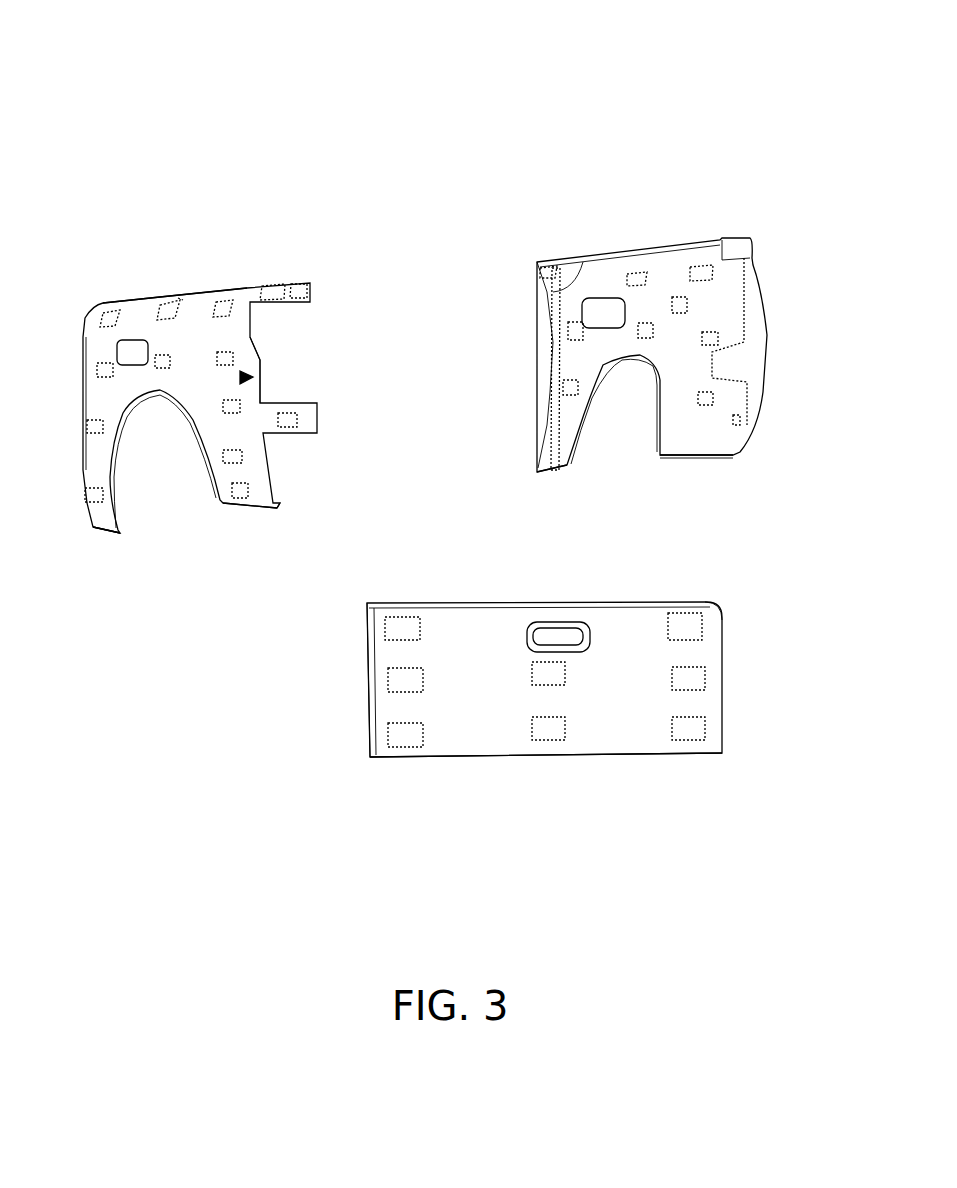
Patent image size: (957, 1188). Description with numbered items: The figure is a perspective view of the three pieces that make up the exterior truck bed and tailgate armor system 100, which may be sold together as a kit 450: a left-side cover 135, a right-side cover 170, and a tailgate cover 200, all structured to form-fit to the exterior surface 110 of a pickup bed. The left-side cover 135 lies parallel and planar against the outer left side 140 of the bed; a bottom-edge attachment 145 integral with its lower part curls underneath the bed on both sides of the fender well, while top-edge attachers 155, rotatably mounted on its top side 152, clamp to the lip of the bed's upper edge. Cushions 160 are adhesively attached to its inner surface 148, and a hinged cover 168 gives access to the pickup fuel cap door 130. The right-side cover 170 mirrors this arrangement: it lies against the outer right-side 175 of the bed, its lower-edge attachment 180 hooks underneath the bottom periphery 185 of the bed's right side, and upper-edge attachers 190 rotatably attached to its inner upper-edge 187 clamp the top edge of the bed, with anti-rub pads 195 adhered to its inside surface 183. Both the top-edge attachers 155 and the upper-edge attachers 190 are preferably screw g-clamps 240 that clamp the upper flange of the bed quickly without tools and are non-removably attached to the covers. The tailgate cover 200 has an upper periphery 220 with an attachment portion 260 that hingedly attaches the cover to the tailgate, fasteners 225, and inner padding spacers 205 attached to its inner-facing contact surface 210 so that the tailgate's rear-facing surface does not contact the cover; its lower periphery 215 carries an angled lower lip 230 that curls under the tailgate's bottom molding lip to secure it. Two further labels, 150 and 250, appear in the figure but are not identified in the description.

The exterior truck bed and tailgate armor system 100 is at (598, 58).
The exterior surface 110 is at (633, 100).
The kit 450 is at (666, 148).
The pickup fuel cap door 130 is at (82, 352).
The left-side cover 135 is at (108, 300).
The outer left side 140 is at (82, 404).
The bottom-edge attachment 145 is at (280, 496).
The inner surface 148 is at (262, 367).
The bottom edges 150 is at (108, 537).
The top side 152 is at (256, 285).
The top-edge attachers 155 is at (100, 298).
The cushions 160 is at (155, 300).
The hinged cover 168 is at (117, 347).
The right-side cover 170 is at (757, 240).
The outer right-side 175 is at (768, 348).
The lower-edge attachment 180 is at (560, 470).
The inside surface 183 is at (556, 355).
The bottom periphery 185 is at (715, 462).
The inner upper-edge 187 is at (552, 302).
The upper-edge attachers 190 is at (650, 250).
The anti-rub pads 195 is at (740, 330).
The screw g-clamps 240 is at (573, 262).
The tailgate cover 200 is at (500, 602).
The inner padding spacers 205 is at (710, 625).
The inner-facing contact surface 210 is at (400, 655).
The lower periphery 215 is at (618, 758).
The upper periphery 220 is at (566, 602).
The fasteners 225 is at (408, 602).
The angled lower lip 230 is at (375, 752).
The top right corner 250 is at (695, 600).
The attachment portion 260 is at (638, 602).